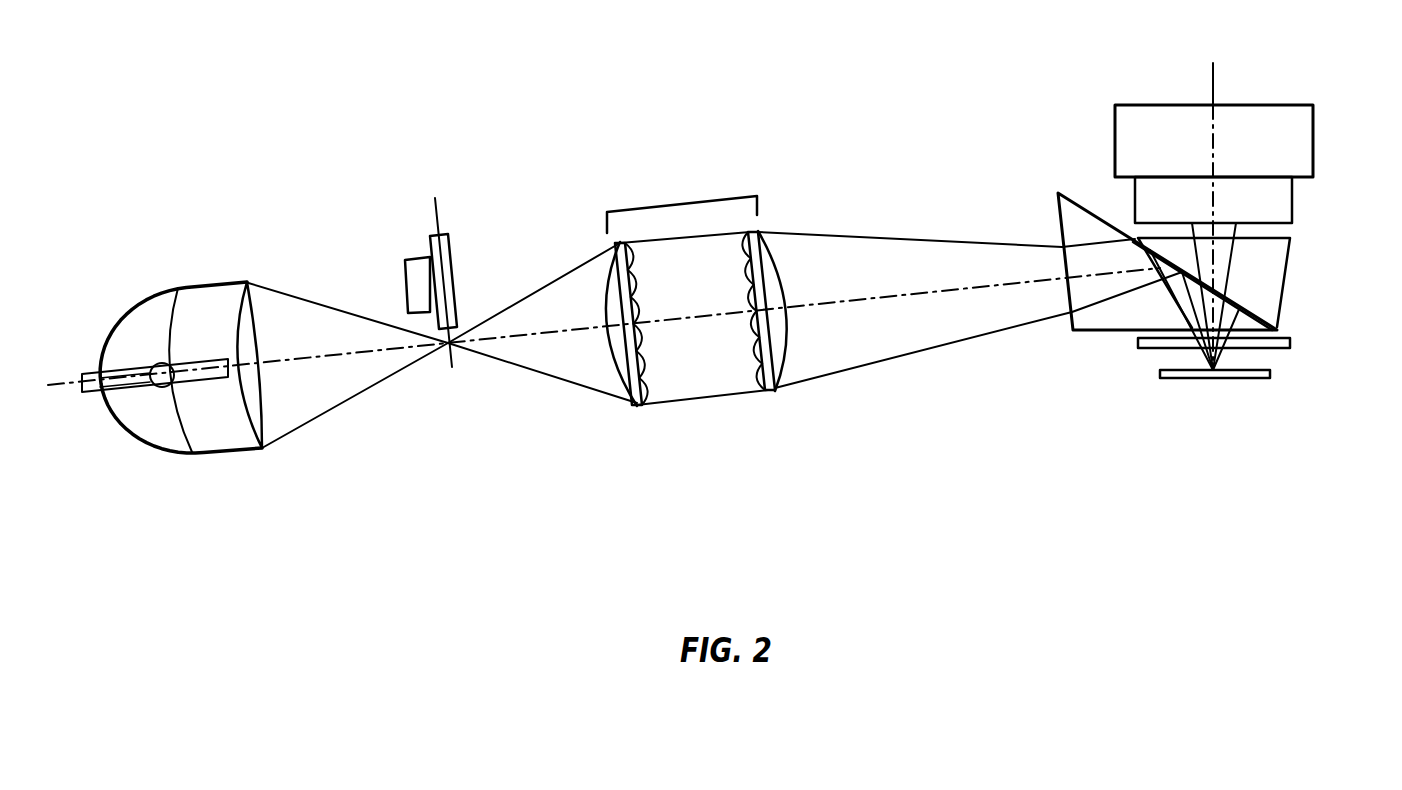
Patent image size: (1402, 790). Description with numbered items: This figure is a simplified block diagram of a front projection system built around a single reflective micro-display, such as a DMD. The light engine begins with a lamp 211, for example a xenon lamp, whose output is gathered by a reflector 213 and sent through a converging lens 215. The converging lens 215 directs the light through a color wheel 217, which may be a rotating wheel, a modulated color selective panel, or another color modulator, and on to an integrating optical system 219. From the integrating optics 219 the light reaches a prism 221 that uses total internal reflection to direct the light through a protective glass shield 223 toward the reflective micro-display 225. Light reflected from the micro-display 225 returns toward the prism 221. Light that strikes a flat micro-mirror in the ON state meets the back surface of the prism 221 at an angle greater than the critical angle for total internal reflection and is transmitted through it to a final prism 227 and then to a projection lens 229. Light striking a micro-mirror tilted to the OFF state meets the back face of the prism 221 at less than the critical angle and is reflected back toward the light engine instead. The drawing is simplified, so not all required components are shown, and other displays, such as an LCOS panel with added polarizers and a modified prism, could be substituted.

The lamp 211 is at (141, 366).
The reflector 213 is at (140, 437).
The converging lens 215 is at (246, 281).
The color wheel 217 is at (456, 247).
The integrating optical system 219 is at (793, 407).
The prism 221 is at (1057, 197).
The protective glass shield 223 is at (1290, 343).
The reflective micro-display 225 is at (1247, 379).
The final prism 227 is at (1289, 267).
The projection lens 229 is at (1313, 137).